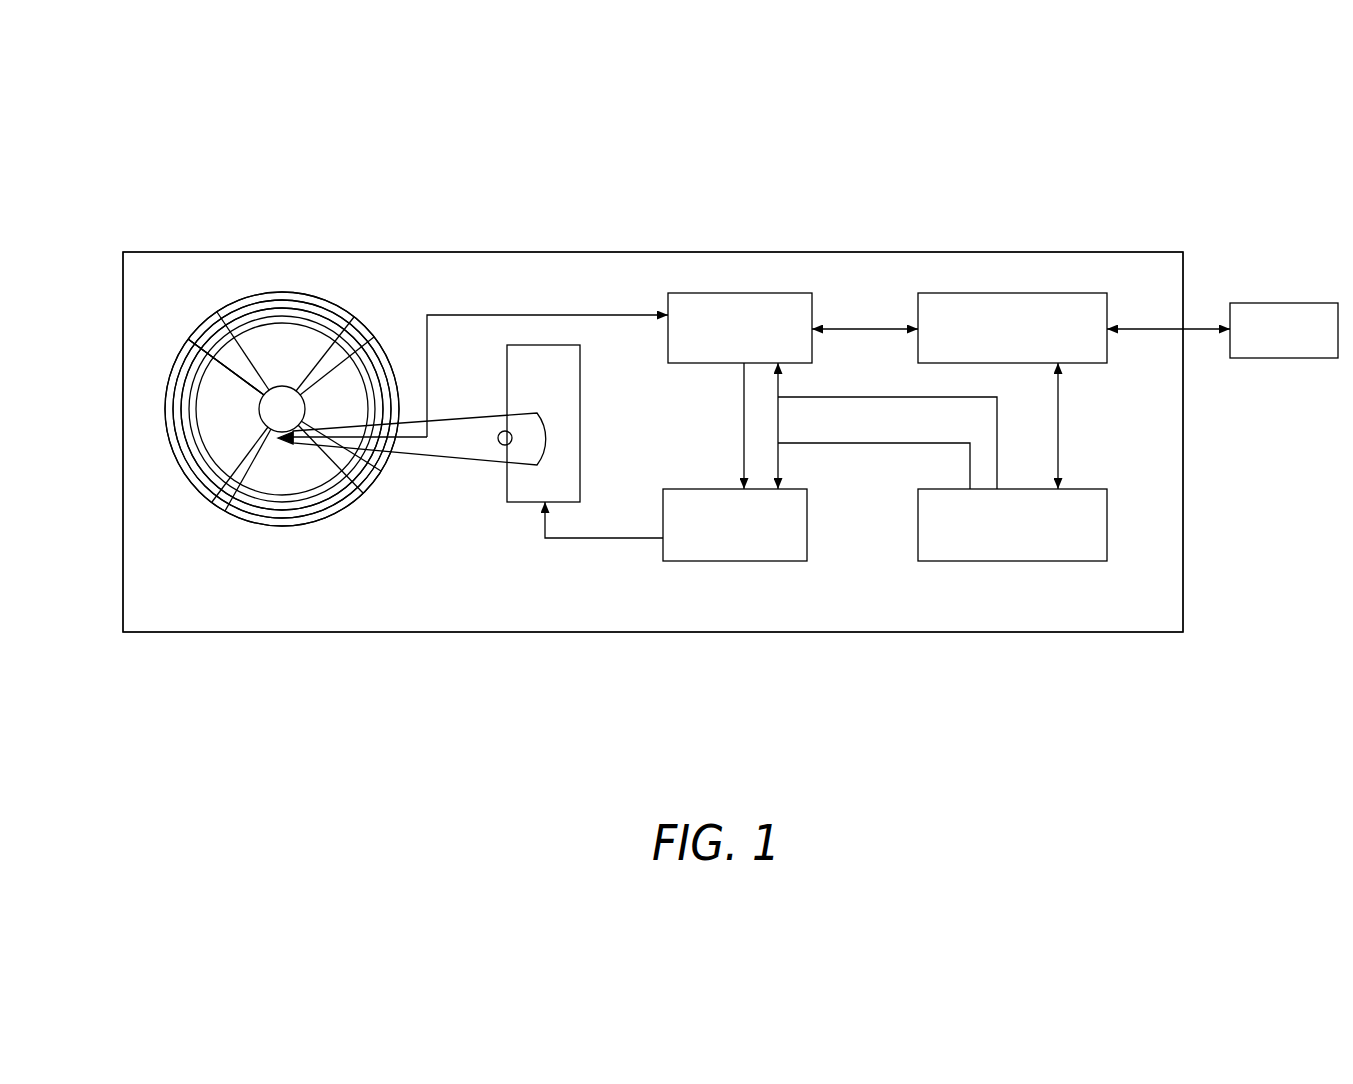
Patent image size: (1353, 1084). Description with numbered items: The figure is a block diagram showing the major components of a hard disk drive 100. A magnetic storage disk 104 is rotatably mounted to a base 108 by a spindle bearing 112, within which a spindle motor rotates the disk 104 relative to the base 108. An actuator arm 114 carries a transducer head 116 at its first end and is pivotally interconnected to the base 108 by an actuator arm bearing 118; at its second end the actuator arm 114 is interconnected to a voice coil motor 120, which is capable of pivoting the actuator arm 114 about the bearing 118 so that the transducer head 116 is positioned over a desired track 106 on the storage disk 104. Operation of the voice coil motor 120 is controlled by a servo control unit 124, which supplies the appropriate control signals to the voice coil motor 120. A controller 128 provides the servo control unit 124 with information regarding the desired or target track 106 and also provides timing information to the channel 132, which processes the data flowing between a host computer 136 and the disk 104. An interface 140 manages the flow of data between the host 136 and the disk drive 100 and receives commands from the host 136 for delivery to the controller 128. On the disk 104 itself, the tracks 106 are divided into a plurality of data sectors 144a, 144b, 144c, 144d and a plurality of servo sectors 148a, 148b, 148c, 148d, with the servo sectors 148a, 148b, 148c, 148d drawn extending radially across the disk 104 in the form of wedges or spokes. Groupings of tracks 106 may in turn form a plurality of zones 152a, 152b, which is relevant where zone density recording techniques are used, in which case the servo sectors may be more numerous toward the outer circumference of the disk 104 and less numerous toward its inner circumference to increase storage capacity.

The hard disk drive 100 is at (693, 249).
The magnetic storage disk 104 is at (276, 294).
The track 106 is at (258, 520).
The base 108 is at (508, 265).
The spindle bearing 112 is at (271, 386).
The actuator arm 114 is at (488, 451).
The transducer head 116 is at (212, 502).
The actuator arm bearing 118 is at (513, 440).
The voice coil motor 120 is at (568, 345).
The servo control unit 124 is at (783, 561).
The controller 128 is at (1045, 561).
The channel 132 is at (758, 293).
The host computer 136 is at (1298, 303).
The interface 140 is at (973, 293).
The data sector 144a is at (217, 312).
The data sector 144b is at (381, 471).
The data sector 144c is at (317, 520).
The data sector 144d is at (175, 372).
The servo sector 148a is at (360, 322).
The servo sector 148b is at (363, 493).
The servo sector 148c is at (200, 497).
The servo sector 148d is at (197, 330).
The zone 152a is at (174, 431).
The zone 152b is at (182, 404).